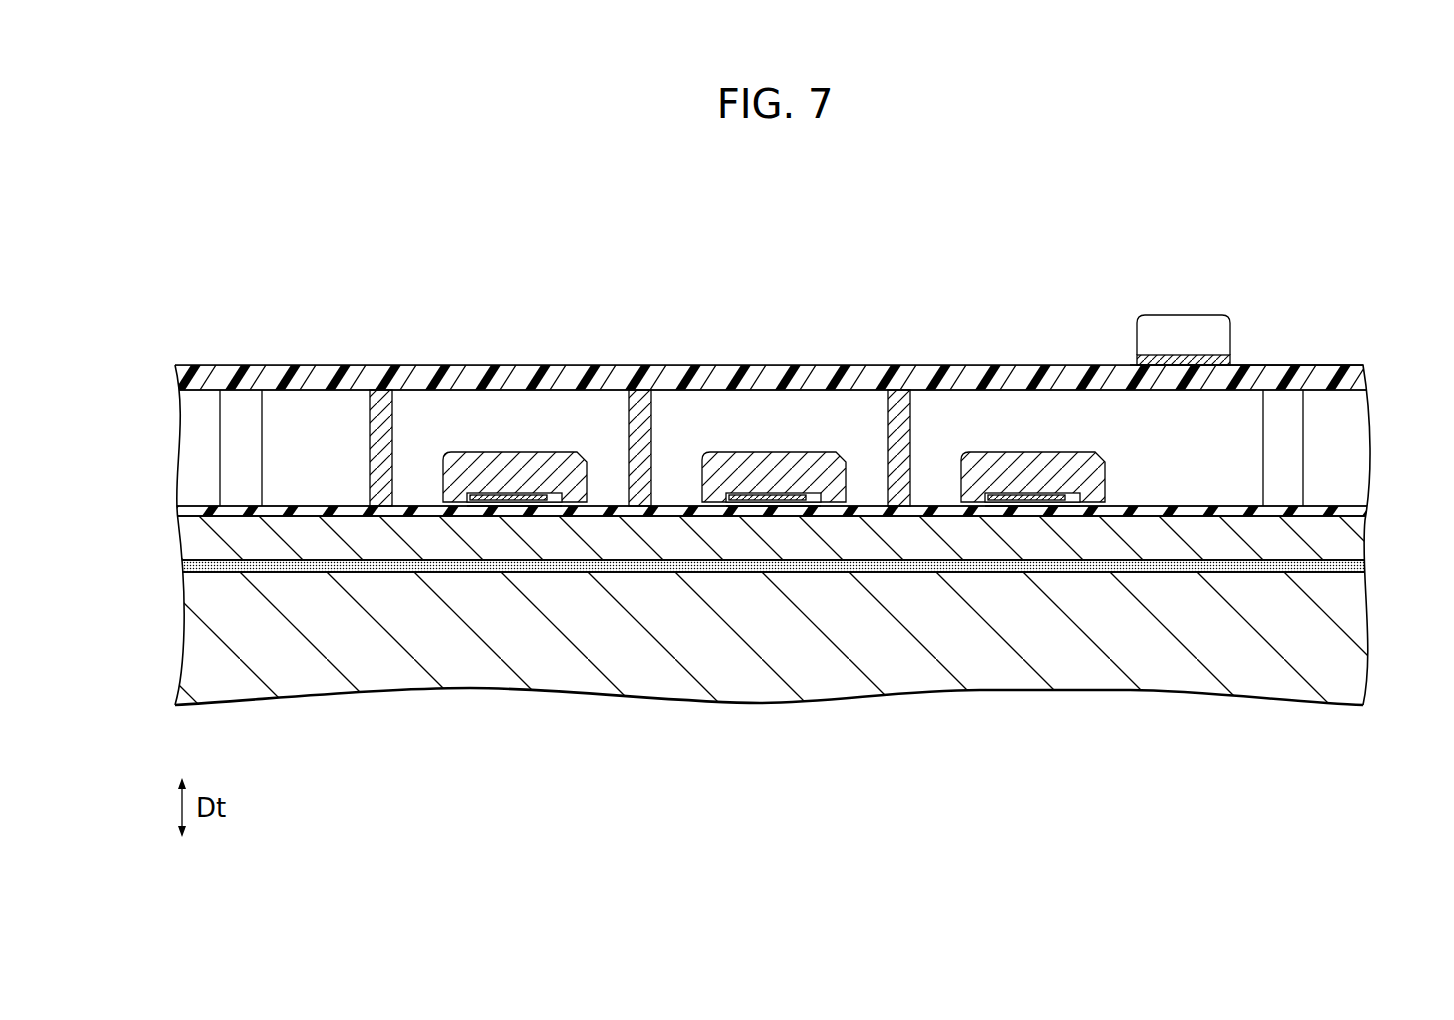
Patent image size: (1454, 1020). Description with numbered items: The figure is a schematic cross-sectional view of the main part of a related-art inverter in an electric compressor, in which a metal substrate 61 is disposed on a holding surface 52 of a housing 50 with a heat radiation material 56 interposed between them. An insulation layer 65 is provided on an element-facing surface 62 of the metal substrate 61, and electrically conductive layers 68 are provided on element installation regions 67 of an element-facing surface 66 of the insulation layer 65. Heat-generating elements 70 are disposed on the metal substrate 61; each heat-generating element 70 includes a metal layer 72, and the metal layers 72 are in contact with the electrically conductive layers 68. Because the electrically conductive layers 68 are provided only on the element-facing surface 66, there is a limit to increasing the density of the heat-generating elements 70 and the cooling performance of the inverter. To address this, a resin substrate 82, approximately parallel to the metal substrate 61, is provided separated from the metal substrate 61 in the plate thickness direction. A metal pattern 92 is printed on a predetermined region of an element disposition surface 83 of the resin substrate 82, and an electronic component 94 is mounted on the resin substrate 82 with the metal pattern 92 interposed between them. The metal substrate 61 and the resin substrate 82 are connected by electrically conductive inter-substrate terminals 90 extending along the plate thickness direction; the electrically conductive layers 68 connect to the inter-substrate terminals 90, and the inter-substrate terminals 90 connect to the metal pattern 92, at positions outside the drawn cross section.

The housing 50 is at (1315, 632).
The holding surface 52 is at (1318, 563).
The heat radiation material 56 is at (198, 567).
The metal substrate 61 is at (1320, 535).
The element-facing surface 62 is at (1337, 513).
The insulation layer 65 is at (197, 510).
The element-facing surface 66 is at (1319, 504).
The element installation region 67 is at (490, 502).
The electrically conductive layer 68 is at (533, 507).
The heat-generating element 70 is at (540, 468).
The metal layer 72 is at (508, 495).
The resin substrate 82 is at (1337, 370).
The element disposition surface 83 is at (1293, 365).
The inter-substrate terminal 90 is at (371, 423).
The metal pattern 92 is at (1200, 358).
The electronic component 94 is at (1156, 332).